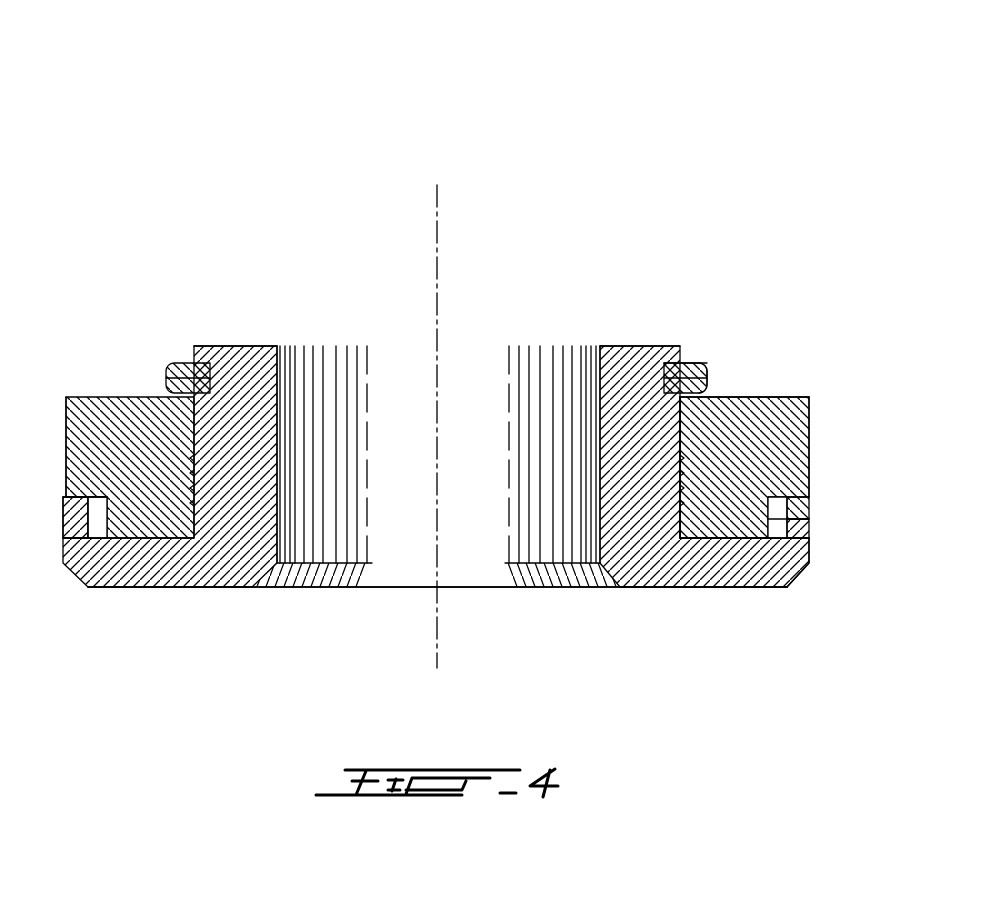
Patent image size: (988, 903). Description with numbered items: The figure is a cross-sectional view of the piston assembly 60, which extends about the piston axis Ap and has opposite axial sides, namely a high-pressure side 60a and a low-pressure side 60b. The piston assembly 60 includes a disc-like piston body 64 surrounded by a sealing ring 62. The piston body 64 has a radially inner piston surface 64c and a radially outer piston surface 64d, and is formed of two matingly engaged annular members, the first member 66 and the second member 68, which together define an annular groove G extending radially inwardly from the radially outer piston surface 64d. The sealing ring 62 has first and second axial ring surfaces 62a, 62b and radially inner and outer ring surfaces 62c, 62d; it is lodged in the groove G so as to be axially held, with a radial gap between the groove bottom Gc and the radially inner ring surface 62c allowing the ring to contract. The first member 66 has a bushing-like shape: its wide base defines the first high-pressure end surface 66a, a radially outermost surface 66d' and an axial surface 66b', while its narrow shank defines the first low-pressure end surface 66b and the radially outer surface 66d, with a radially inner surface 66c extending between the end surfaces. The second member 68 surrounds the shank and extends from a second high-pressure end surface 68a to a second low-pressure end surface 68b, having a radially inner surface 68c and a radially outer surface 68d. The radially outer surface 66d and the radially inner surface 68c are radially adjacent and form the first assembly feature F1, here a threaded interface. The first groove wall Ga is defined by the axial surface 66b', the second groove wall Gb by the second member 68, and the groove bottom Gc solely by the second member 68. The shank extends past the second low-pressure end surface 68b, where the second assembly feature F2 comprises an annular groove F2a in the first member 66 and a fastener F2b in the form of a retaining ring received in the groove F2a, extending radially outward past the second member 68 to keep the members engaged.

The piston assembly 60 is at (112, 132).
The high-pressure side 60a is at (250, 628).
The low-pressure side 60b is at (217, 303).
The sealing ring 62 is at (52, 513).
The first axial ring surface 62a is at (80, 540).
The second axial ring surface 62b is at (72, 496).
The radially inner ring surface 62c is at (88, 517).
The radially outer ring surface 62d is at (62, 525).
The piston body 64 is at (115, 408).
The radially inner piston surface 64c is at (277, 383).
The radially outer piston surface 64d is at (66, 406).
The first member 66 is at (142, 572).
The first high-pressure end surface 66a is at (676, 587).
The first low-pressure end surface 66b is at (640, 309).
The axial surface 66b' is at (578, 526).
The radially inner surface 66c is at (600, 464).
The radially outer surface 66d is at (770, 456).
The radially outermost surface 66d' is at (840, 567).
The second member 68 is at (744, 467).
The second high-pressure end surface 68a is at (728, 538).
The second low-pressure end surface 68b is at (748, 397).
The radially inner surface 68c is at (678, 443).
The radially outer surface 68d is at (809, 450).
The first assembly feature F1 is at (694, 470).
The second assembly feature F2 is at (716, 372).
The annular groove F2a is at (683, 363).
The fastener F2b is at (708, 372).
The annular groove G is at (882, 470).
The first groove wall Ga is at (809, 535).
The second groove wall Gb is at (809, 500).
The groove bottom Gc is at (810, 517).
The piston axis Ap is at (437, 215).